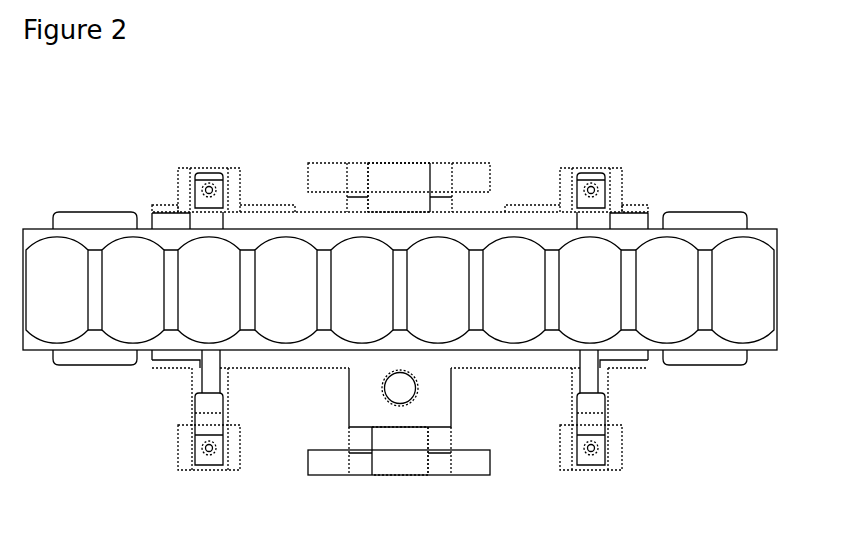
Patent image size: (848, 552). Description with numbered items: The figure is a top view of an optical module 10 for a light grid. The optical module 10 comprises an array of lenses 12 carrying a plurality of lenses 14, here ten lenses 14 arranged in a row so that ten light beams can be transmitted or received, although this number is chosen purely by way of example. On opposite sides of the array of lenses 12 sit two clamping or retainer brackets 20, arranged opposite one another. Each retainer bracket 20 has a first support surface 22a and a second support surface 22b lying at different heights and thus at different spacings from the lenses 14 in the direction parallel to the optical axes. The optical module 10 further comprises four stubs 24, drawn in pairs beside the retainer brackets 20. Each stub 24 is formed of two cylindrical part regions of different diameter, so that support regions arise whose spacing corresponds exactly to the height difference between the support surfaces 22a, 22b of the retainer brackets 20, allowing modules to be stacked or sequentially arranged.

The optical module 10 is at (545, 103).
The array of lenses 12 is at (762, 347).
The lens 14 is at (742, 267).
The retainer bracket 20 is at (440, 206).
The first support surface 22a is at (402, 175).
The second support surface 22b is at (325, 180).
The stub 24 is at (193, 191).